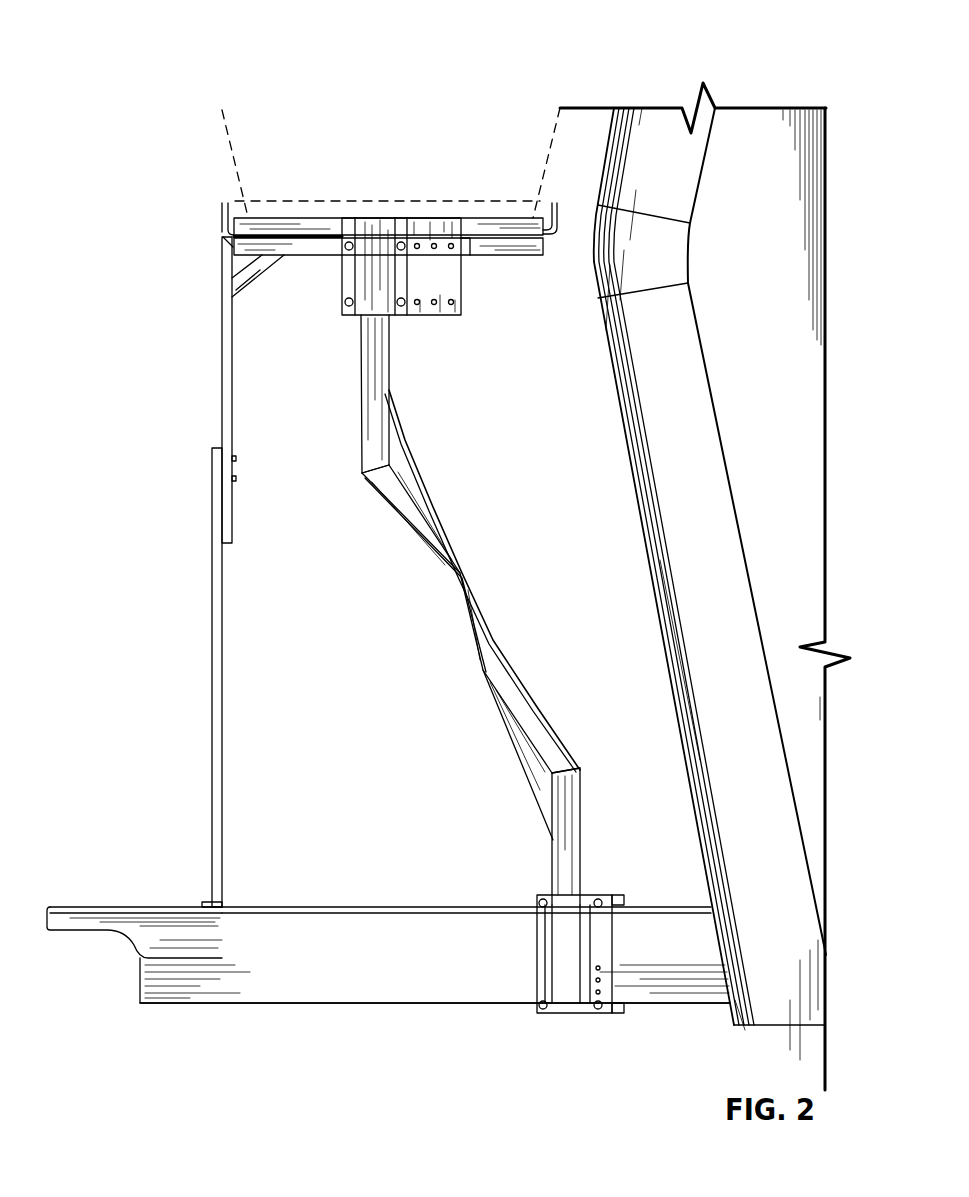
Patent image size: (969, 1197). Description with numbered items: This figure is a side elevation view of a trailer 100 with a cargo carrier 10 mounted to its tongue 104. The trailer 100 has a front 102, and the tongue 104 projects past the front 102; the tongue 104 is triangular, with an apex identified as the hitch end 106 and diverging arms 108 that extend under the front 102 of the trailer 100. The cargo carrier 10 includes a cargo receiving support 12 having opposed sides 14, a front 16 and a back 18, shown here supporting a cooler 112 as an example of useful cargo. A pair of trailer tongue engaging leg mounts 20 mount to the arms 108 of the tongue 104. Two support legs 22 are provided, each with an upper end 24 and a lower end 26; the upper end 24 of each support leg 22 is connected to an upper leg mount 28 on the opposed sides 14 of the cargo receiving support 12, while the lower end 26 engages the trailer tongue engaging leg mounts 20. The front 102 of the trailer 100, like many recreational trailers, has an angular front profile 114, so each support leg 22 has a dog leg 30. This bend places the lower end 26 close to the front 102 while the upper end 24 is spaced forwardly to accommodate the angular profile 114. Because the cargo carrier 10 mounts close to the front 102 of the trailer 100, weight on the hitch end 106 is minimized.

The cargo carrier 10 is at (258, 78).
The cooler 112 is at (232, 132).
The cargo receiving support 12 is at (474, 208).
The opposed sides 14 is at (295, 230).
The front 16 is at (232, 226).
The back 18 is at (549, 256).
The upper leg mount 28 is at (358, 288).
The upper end 24 is at (380, 345).
The support legs 22 is at (442, 596).
The dog leg 30 is at (429, 476).
The angular front profile 114 is at (554, 393).
The lower end 26 is at (562, 882).
The trailer tongue engaging leg mounts 20 is at (574, 990).
The front 102 is at (621, 546).
The trailer 100 is at (790, 436).
The hitch end 106 is at (98, 906).
The diverging arms 108 is at (396, 969).
The tongue 104 is at (400, 1004).